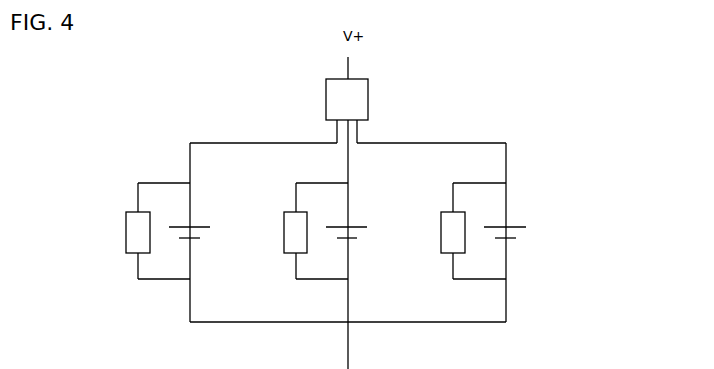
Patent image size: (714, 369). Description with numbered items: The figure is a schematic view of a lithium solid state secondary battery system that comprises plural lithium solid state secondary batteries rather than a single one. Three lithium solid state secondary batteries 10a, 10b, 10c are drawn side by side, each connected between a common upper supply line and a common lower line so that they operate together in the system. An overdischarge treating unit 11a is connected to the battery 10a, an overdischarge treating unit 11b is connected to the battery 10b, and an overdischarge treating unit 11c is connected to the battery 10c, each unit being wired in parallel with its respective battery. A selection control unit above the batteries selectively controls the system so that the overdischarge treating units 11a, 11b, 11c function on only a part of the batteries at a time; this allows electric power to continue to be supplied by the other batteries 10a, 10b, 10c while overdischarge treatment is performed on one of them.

The lithium solid state secondary battery 10a is at (197, 227).
The lithium solid state secondary battery 10b is at (360, 227).
The lithium solid state secondary battery 10c is at (513, 227).
The overdischarge treating unit 11a is at (140, 232).
The overdischarge treating unit 11b is at (293, 232).
The overdischarge treating unit 11c is at (453, 232).